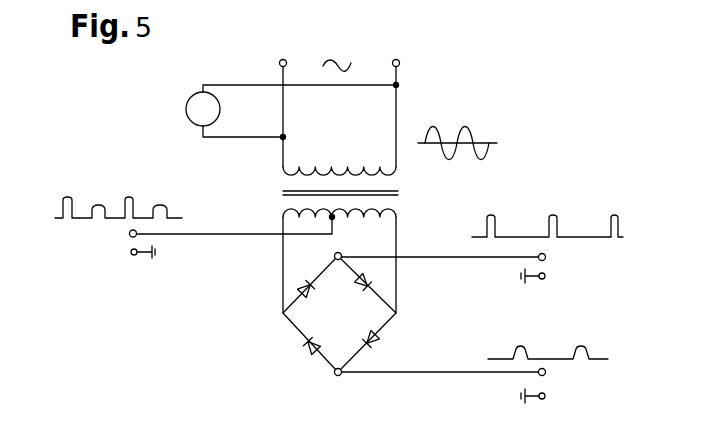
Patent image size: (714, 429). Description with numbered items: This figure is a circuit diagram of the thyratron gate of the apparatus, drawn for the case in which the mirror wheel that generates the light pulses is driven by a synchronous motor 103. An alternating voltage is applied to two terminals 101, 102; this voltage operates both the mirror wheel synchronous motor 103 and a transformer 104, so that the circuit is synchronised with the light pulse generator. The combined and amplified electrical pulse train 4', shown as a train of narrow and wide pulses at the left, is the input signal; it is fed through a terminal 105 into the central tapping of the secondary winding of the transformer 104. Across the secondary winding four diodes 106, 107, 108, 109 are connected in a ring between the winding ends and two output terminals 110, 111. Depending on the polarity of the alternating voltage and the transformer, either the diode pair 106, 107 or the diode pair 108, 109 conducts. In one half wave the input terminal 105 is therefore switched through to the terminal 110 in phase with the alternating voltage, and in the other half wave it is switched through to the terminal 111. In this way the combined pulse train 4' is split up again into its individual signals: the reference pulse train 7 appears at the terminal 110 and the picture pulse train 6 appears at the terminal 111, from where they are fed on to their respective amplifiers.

The terminal 101 is at (283, 50).
The terminal 102 is at (398, 50).
The synchronous motor 103 is at (183, 109).
The transformer 104 is at (365, 193).
The terminal 105 is at (122, 239).
The diode 106 is at (311, 304).
The diode 107 is at (353, 296).
The diode 108 is at (296, 352).
The diode 109 is at (393, 344).
The terminal 110 is at (549, 262).
The terminal 111 is at (548, 381).
The combined and amplified electrical pulse train 4' is at (118, 194).
The reference pulse train 7 is at (555, 218).
The picture pulse train 6 is at (583, 347).